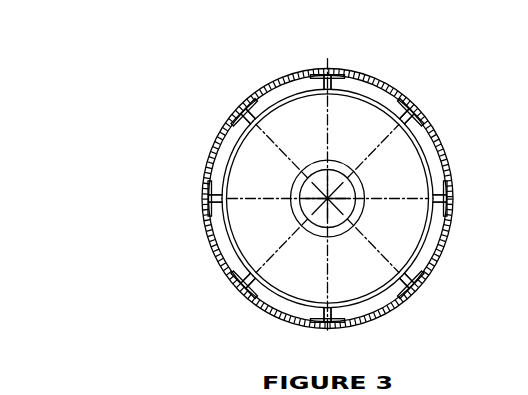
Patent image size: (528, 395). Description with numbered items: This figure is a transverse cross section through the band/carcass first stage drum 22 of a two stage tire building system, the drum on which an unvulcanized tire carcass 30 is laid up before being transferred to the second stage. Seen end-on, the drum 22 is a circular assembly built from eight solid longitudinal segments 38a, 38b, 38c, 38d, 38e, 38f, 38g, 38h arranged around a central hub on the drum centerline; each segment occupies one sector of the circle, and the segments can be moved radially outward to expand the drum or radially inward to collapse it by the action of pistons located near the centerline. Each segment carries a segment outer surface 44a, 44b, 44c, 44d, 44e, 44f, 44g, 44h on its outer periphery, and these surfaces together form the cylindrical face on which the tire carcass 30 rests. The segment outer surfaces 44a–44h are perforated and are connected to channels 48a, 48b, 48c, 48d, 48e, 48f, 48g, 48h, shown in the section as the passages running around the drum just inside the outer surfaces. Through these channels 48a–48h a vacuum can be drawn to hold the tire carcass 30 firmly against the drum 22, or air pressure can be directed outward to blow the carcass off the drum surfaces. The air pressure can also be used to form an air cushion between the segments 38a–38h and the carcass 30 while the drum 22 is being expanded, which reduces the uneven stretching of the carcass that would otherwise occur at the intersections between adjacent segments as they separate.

The first stage drum 22 is at (328, 66).
The tire carcass 30 is at (450, 170).
The longitudinal segment 38a is at (395, 83).
The longitudinal segment 38b is at (433, 158).
The longitudinal segment 38c is at (435, 230).
The longitudinal segment 38d is at (394, 302).
The longitudinal segment 38e is at (297, 312).
The longitudinal segment 38f is at (226, 243).
The longitudinal segment 38g is at (221, 166).
The longitudinal segment 38h is at (260, 96).
The segment outer surface 44a is at (347, 70).
The segment outer surface 44b is at (427, 113).
The segment outer surface 44c is at (450, 213).
The segment outer surface 44d is at (410, 292).
The segment outer surface 44e is at (262, 308).
The segment outer surface 44f is at (228, 278).
The segment outer surface 44g is at (227, 128).
The segment outer surface 44h is at (313, 68).
The channel 48a is at (378, 93).
The channel 48b is at (442, 180).
The channel 48c is at (432, 243).
The channel 48d is at (363, 310).
The channel 48e is at (313, 310).
The channel 48f is at (208, 230).
The channel 48g is at (230, 150).
The channel 48h is at (281, 90).